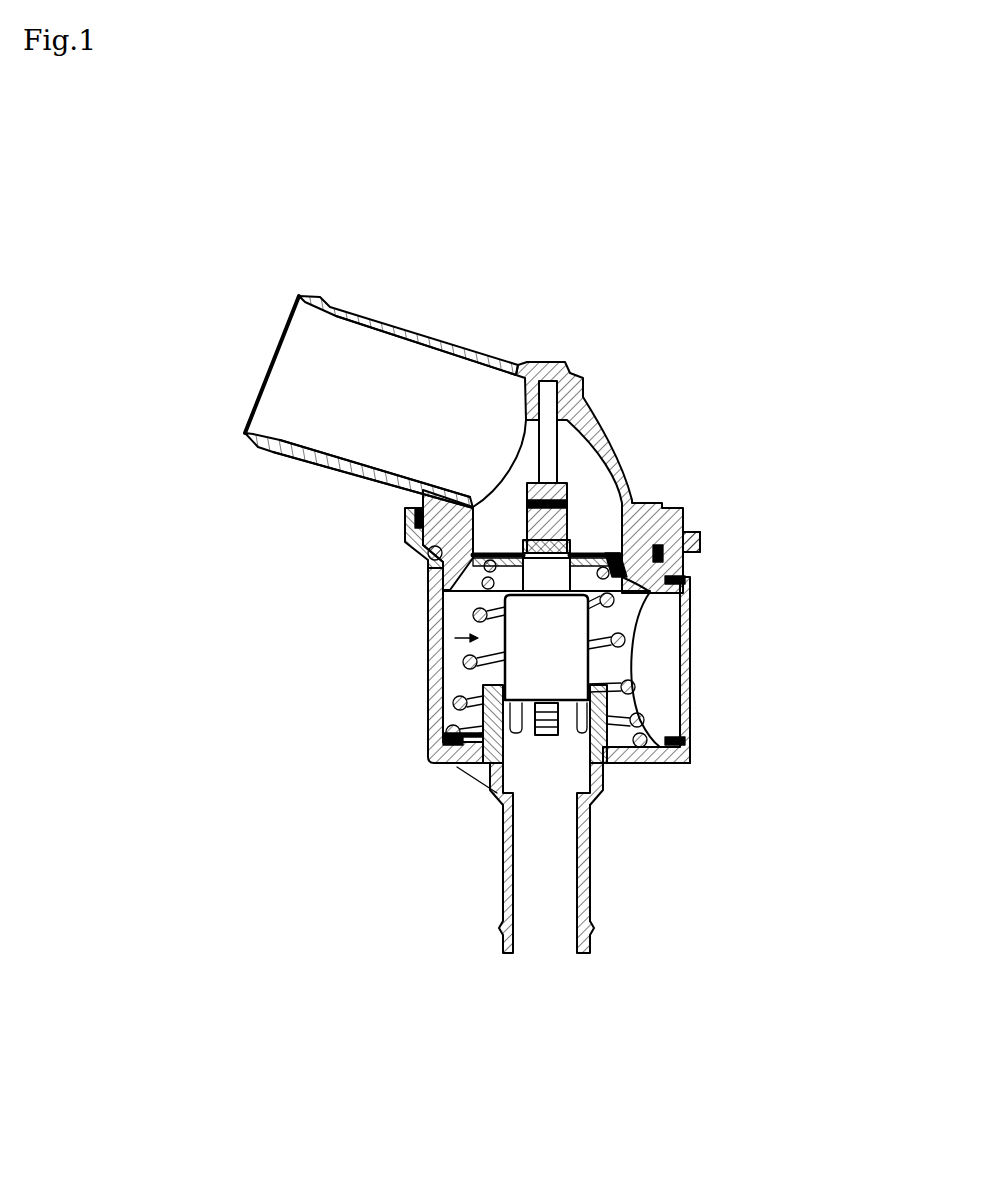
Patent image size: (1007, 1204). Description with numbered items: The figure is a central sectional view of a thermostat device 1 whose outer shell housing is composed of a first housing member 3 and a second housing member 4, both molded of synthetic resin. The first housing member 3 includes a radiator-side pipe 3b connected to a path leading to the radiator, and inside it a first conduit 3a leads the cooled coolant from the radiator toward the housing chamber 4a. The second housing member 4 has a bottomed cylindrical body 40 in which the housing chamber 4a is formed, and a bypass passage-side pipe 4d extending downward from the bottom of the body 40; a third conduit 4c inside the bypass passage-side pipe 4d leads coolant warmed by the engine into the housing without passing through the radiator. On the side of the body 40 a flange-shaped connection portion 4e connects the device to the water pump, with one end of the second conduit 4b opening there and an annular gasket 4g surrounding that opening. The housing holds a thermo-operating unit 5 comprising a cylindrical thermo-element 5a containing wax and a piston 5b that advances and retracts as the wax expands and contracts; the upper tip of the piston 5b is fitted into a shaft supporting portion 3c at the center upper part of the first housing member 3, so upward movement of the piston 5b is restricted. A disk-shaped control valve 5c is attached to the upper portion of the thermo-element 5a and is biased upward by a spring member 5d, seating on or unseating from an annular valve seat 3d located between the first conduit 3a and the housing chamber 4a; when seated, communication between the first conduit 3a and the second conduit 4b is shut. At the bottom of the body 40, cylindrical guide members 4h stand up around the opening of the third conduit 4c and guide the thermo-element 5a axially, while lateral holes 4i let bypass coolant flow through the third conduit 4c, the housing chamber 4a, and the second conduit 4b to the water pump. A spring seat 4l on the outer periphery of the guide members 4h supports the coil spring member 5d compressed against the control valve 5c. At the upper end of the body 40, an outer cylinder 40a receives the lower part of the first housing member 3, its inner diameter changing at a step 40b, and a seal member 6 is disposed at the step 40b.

The thermostat device 1 is at (584, 298).
The first housing member 3 is at (460, 342).
The first conduit 3a is at (297, 390).
The radiator-side pipe 3b is at (317, 462).
The shaft supporting portion 3c is at (597, 432).
The annular valve seat 3d is at (427, 610).
The second housing member 4 is at (427, 730).
The housing chamber 4a is at (427, 683).
The second conduit 4b is at (663, 650).
The third conduit 4c is at (555, 940).
The bypass passage-side pipe 4d is at (593, 895).
The connection portion 4e is at (690, 755).
The annular gasket 4g is at (690, 715).
The guide members 4h is at (565, 732).
The lateral holes 4i is at (546, 736).
The spring seat 4l is at (657, 765).
The thermo-operating unit 5 is at (423, 642).
The thermo-element 5a is at (573, 617).
The piston 5b is at (552, 448).
The control valve 5c is at (597, 535).
The spring member 5d is at (587, 690).
The seal member 6 is at (685, 535).
The body 40 is at (427, 624).
The outer cylinder 40a is at (700, 540).
The step 40b is at (413, 553).